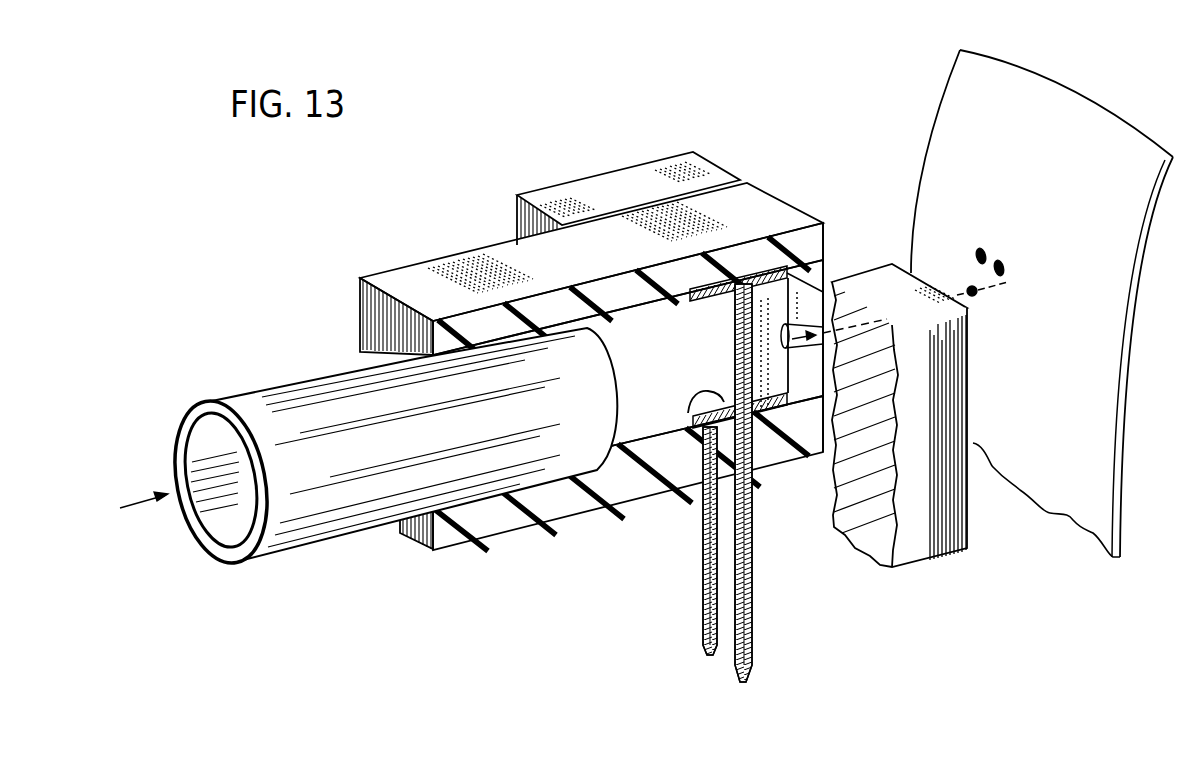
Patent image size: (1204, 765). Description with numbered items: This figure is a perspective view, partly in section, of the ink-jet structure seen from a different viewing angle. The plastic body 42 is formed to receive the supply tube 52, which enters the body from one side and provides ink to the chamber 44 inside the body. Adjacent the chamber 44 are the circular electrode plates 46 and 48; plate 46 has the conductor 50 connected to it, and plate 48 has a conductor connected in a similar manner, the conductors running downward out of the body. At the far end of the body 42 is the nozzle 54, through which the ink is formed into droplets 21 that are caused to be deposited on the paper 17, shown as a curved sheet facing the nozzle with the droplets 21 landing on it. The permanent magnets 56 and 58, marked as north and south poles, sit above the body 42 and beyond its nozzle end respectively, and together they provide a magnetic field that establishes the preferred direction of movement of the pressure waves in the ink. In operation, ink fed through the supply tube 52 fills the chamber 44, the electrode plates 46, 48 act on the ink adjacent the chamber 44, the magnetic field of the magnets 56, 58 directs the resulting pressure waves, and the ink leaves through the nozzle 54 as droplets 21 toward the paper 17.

The paper 17 is at (937, 117).
The droplets 21 is at (977, 296).
The plastic body 42 is at (397, 273).
The chamber 44 is at (642, 355).
The circular electrode plate 46 is at (778, 335).
The circular electrode plate 48 is at (709, 400).
The conductor 50 is at (753, 603).
The supply tube 52 is at (294, 385).
The nozzle 54 is at (798, 326).
The permanent magnet 56 is at (647, 168).
The permanent magnet 58 is at (920, 557).